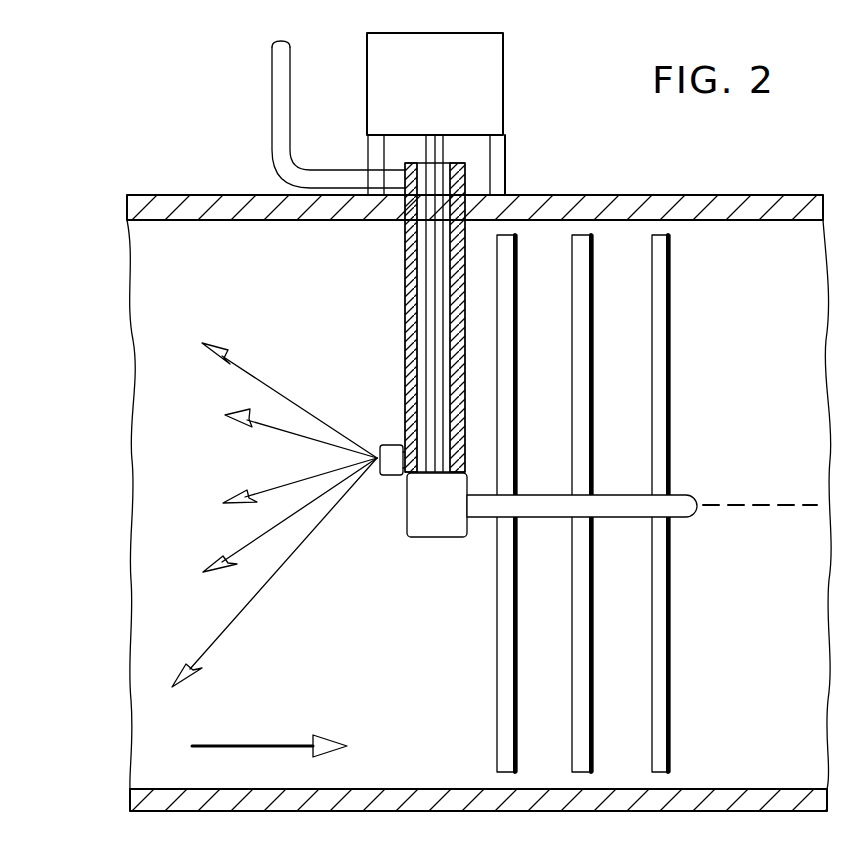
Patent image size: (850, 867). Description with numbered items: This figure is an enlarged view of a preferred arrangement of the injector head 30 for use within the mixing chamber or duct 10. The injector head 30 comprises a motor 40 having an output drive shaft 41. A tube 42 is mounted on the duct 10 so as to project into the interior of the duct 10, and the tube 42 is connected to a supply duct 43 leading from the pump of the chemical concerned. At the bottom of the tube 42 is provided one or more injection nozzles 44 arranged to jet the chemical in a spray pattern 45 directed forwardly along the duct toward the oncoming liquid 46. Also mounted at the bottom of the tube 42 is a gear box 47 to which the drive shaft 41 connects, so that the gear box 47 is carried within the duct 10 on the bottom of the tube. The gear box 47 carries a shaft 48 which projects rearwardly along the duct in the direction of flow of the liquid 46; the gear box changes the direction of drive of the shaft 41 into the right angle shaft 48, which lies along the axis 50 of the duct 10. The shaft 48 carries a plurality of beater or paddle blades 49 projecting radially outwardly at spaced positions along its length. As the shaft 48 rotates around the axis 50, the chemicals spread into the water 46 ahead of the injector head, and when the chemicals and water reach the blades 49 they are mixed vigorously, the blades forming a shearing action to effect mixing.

The duct 10 is at (641, 815).
The injector head 30 is at (642, 462).
The motor 40 is at (510, 65).
The output drive shaft 41 is at (445, 147).
The tube 42 is at (403, 292).
The supply duct 43 is at (272, 135).
The injection nozzle 44 is at (388, 482).
The spray pattern 45 is at (273, 588).
The liquid 46 is at (282, 758).
The gear box 47 is at (446, 545).
The shaft 48 is at (552, 512).
The beater or paddle blades 49 is at (673, 384).
The axis 50 is at (752, 506).